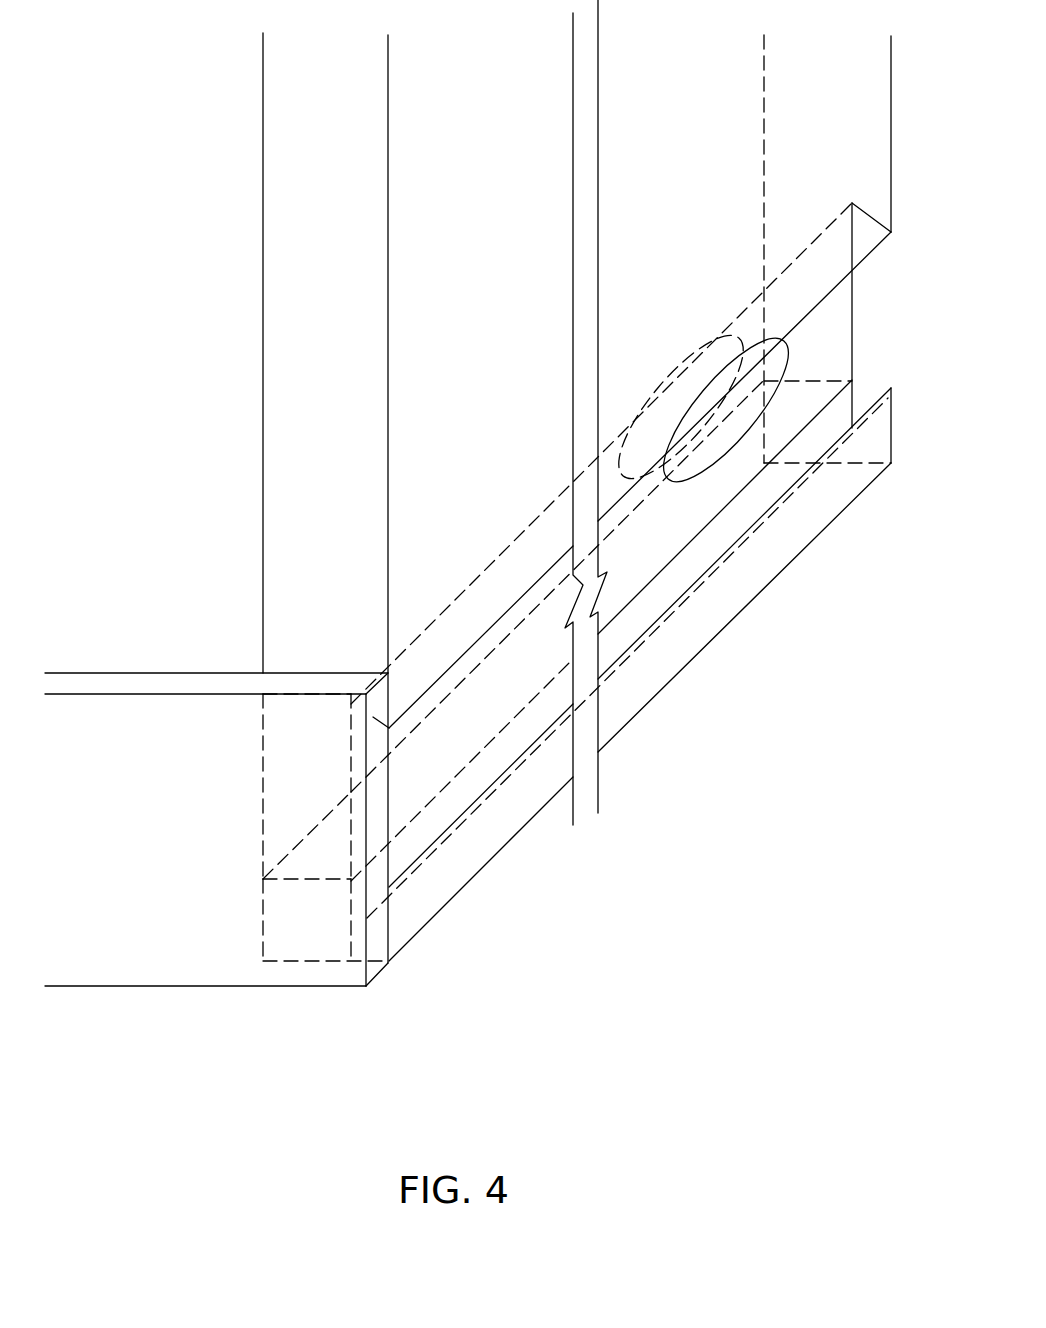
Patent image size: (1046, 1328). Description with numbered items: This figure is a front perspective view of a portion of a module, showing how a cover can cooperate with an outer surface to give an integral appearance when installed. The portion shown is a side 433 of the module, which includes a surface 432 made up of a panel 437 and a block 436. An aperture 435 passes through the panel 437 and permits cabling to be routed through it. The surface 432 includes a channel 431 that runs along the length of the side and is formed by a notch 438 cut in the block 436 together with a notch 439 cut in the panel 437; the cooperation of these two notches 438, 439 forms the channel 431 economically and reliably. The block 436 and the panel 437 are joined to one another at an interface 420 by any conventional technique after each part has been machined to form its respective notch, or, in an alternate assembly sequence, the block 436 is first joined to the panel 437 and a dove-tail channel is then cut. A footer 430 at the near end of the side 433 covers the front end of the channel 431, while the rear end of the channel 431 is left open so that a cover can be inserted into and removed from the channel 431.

The interface 420 is at (263, 878).
The footer 430 is at (290, 987).
The channel 431 is at (340, 790).
The surface 432 is at (501, 388).
The side 433 is at (540, 876).
The aperture 435 is at (706, 488).
The block 436 is at (263, 906).
The panel 437 is at (263, 728).
The notch 438 is at (351, 927).
The notch 439 is at (350, 748).